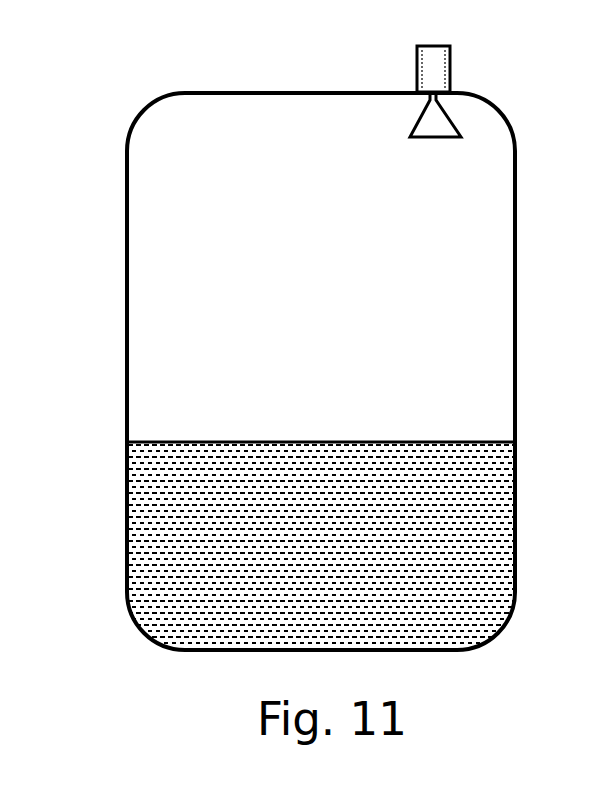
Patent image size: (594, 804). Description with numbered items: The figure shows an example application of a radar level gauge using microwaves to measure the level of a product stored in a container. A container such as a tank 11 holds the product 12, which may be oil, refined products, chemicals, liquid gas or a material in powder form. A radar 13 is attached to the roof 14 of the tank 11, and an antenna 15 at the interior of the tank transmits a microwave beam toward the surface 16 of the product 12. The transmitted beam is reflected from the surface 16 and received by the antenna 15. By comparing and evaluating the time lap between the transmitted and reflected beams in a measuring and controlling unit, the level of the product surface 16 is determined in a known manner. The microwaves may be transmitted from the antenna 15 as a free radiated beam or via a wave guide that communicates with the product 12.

The tank 11 is at (127, 243).
The product 12 is at (187, 505).
The radar 13 is at (450, 75).
The roof 14 is at (270, 97).
The antenna 15 is at (410, 118).
The surface 16 is at (318, 440).